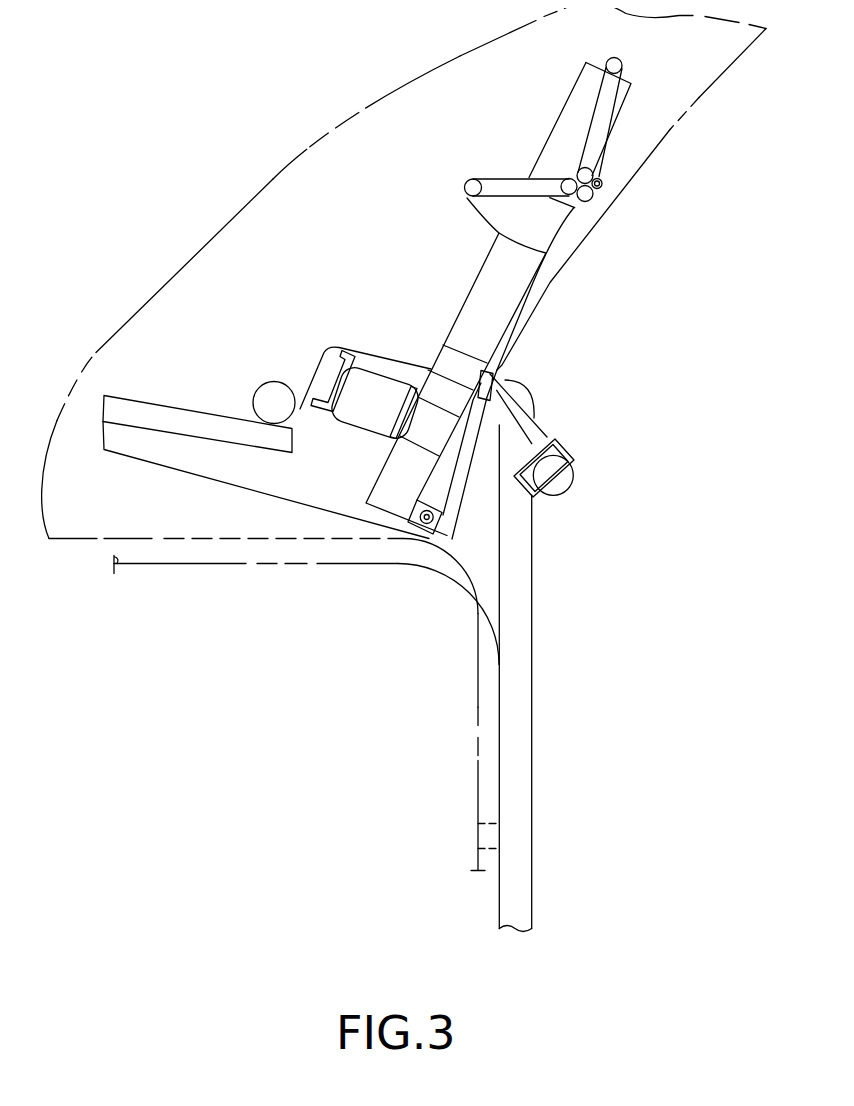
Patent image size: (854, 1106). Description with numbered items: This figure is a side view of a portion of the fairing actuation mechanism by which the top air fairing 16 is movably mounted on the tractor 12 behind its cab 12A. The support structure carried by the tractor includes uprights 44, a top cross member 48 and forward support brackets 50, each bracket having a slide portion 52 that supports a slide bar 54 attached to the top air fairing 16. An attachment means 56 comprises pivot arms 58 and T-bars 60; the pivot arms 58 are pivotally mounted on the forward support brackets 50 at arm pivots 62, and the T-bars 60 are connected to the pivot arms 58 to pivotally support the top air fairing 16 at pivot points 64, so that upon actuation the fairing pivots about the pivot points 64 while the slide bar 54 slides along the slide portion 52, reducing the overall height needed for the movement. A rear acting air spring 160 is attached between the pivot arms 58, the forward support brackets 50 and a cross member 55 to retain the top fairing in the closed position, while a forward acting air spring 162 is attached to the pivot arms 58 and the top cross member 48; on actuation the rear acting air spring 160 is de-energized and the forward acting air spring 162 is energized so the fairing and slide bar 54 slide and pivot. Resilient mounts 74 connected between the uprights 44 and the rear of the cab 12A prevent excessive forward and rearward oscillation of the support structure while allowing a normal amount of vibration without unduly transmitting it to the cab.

The tractor 12 is at (348, 710).
The cab 12A is at (468, 776).
The top air fairing 16 is at (259, 174).
The uprights 44 is at (523, 692).
The top cross member 48 is at (567, 470).
The forward support brackets 50 is at (183, 466).
The slide portion 52 is at (149, 396).
The slide bar 54 is at (256, 380).
The cross member 55 is at (323, 344).
The attachment means 56 is at (368, 260).
The pivot arms 58 is at (471, 262).
The T-bars 60 is at (535, 176).
The arm pivots 62 is at (426, 510).
The pivot points 64 is at (595, 176).
The resilient mounts 74 is at (475, 830).
The rear acting air springs 160 is at (373, 354).
The forward acting air spring 162 is at (518, 406).